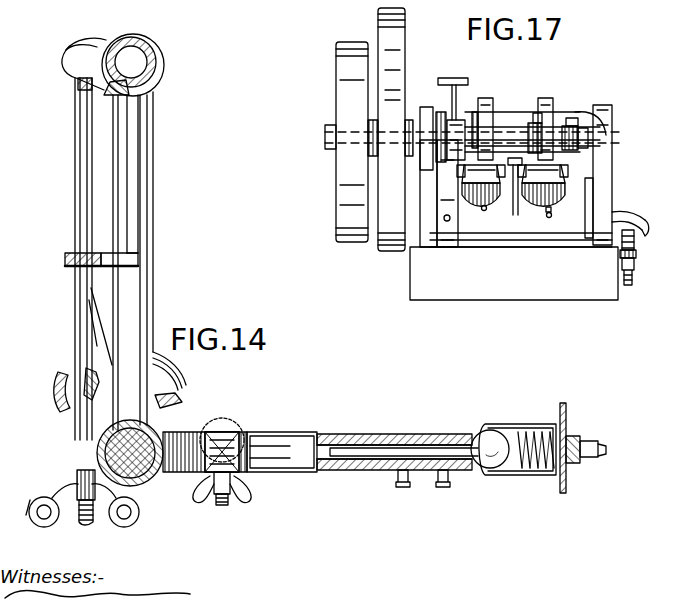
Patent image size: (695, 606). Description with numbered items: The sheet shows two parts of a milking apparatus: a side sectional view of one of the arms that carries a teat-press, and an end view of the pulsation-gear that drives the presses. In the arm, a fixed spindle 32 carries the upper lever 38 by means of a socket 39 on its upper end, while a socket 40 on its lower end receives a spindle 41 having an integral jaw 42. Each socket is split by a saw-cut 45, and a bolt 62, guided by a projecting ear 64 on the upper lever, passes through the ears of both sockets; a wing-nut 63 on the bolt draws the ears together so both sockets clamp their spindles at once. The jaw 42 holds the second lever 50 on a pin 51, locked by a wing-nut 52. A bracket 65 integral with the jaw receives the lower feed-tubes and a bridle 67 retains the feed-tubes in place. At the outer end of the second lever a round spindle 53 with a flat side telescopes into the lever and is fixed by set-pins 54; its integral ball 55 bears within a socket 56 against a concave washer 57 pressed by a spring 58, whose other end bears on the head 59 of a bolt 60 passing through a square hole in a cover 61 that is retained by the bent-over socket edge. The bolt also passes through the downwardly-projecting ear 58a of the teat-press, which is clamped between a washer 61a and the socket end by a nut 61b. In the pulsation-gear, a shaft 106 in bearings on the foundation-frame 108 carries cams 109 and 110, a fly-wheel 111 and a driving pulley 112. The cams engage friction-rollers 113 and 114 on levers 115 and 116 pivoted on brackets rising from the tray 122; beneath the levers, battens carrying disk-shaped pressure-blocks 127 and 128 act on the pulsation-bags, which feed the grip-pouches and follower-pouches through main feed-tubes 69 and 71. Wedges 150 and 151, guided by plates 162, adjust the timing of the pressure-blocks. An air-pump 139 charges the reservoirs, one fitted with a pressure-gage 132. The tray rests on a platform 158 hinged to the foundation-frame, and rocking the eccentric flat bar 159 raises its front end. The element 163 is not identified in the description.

In FIG. 14, the spindle 32 is at (156, 48).
In FIG. 14, the socket 39 is at (163, 75).
In FIG. 14, the saw-cut 45 is at (108, 88).
In FIG. 14, the bolt 62 is at (74, 203).
In FIG. 14, the upper lever 38 is at (154, 300).
In FIG. 14, the projecting ear 64 is at (73, 268).
In FIG. 14, the bridle 67 is at (96, 336).
In FIG. 14, the bracket 65 is at (56, 392).
In FIG. 14, the spindle 41 is at (160, 410).
In FIG. 14, the socket 40 is at (135, 459).
In FIG. 14, the wing-nut 63 is at (140, 512).
In FIG. 14, the jaw 42 is at (198, 432).
In FIG. 14, the pin 51 is at (232, 426).
In FIG. 14, the wing-nut 52 is at (254, 500).
In FIG. 14, the second lever 50 is at (292, 432).
In FIG. 14, the round spindle 53 is at (350, 470).
In FIG. 14, the set-pins 54 is at (430, 500).
In FIG. 14, the ball 55 is at (478, 438).
In FIG. 14, the socket 56 is at (510, 425).
In FIG. 14, the concave washer 57 is at (520, 470).
In FIG. 14, the head 59 is at (540, 425).
In FIG. 14, the spring 58 is at (535, 472).
In FIG. 14, the cover 61 is at (548, 472).
In FIG. 14, the downwardly-projecting ear 58a is at (568, 488).
In FIG. 14, the washer 61a is at (574, 434).
In FIG. 14, the bolt 60 is at (606, 450).
In FIG. 14, the nut 61b is at (582, 462).
In FIG. 17, the pulley 112 is at (352, 42).
In FIG. 17, the fly-wheel 111 is at (400, 25).
In FIG. 17, the air-pump 139 is at (447, 115).
In FIG. 17, the cam 109 is at (487, 98).
In FIG. 17, the shaft 106 is at (535, 129).
In FIG. 17, the pressure-gage 132 is at (526, 125).
In FIG. 17, the cam 110 is at (547, 98).
In FIG. 17, the main feed-tube 71 is at (617, 200).
In FIG. 17, the plates 162 is at (452, 176).
In FIG. 17, the friction-roller 113 is at (478, 212).
In FIG. 17, the pressure-block 127 is at (516, 212).
In FIG. 17, the friction-roller 114 is at (540, 212).
In FIG. 17, the lever 116 is at (553, 215).
In FIG. 17, the gear hub 163 is at (560, 178).
In FIG. 17, the pressure-block 128 is at (575, 190).
In FIG. 17, the main feed-tube 69 is at (648, 218).
In FIG. 17, the tray 122 is at (540, 248).
In FIG. 17, the platform 158 is at (585, 245).
In FIG. 17, the foundation-frame 108 is at (468, 300).
In FIG. 17, the wedge 150 is at (486, 212).
In FIG. 17, the lever 115 is at (490, 212).
In FIG. 17, the wedge 151 is at (552, 218).
In FIG. 17, the flat bar 159 is at (632, 286).